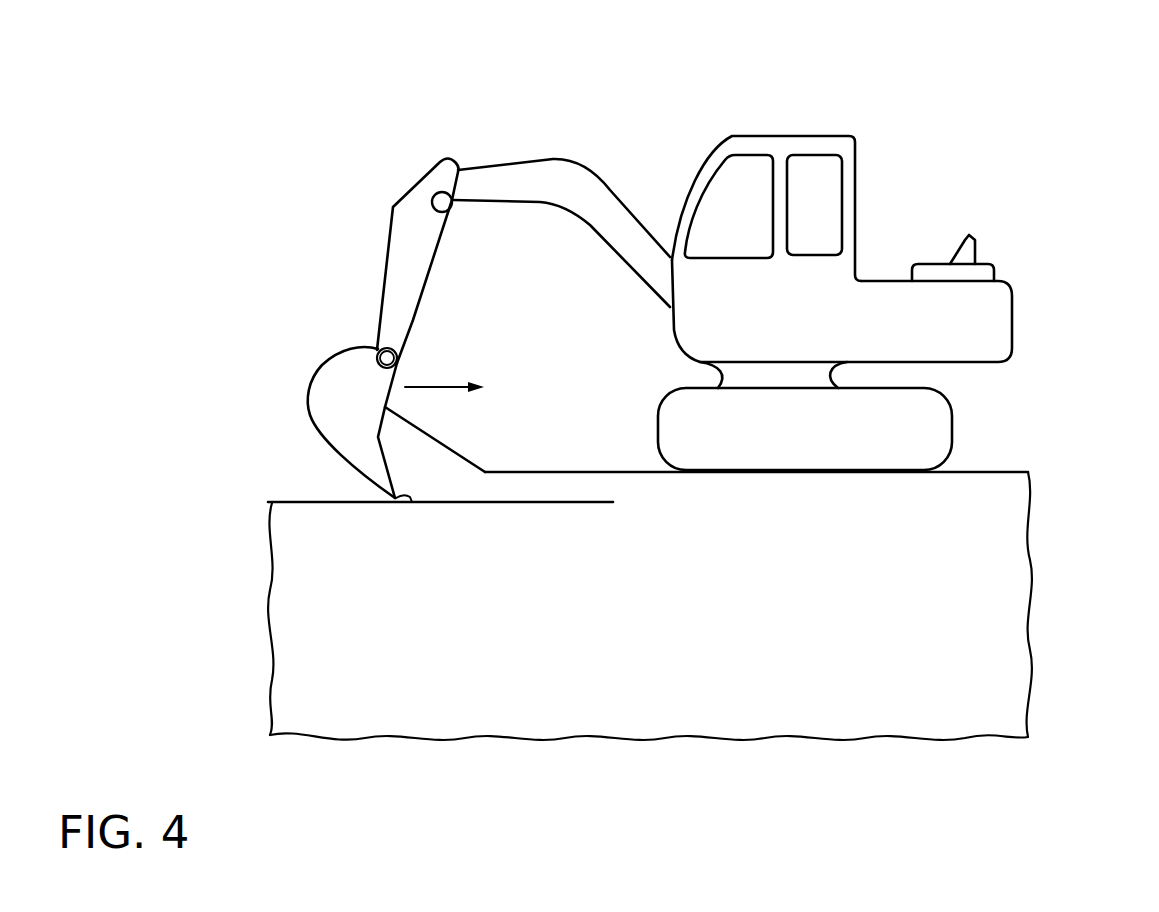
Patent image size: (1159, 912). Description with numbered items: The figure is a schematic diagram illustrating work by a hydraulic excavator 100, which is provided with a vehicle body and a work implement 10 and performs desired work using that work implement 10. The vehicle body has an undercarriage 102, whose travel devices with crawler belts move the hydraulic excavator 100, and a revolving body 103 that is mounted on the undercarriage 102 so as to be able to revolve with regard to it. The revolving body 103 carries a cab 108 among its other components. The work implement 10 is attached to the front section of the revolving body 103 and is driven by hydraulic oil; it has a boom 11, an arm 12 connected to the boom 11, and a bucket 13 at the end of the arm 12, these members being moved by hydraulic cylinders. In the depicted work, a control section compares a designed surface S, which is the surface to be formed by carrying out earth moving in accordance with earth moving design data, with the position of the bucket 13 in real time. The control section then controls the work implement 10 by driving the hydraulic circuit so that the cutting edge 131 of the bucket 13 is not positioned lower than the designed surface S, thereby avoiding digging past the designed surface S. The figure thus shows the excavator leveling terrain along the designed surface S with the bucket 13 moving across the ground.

The hydraulic excavator 100 is at (897, 250).
The undercarriage 102 is at (947, 428).
The revolving body 103 is at (1013, 323).
The cab 108 is at (755, 143).
The work implement 10 is at (444, 335).
The boom 11 is at (553, 158).
The arm 12 is at (385, 253).
The bucket 13 is at (351, 470).
The cutting edge 131 is at (410, 503).
The designed surface S is at (552, 502).